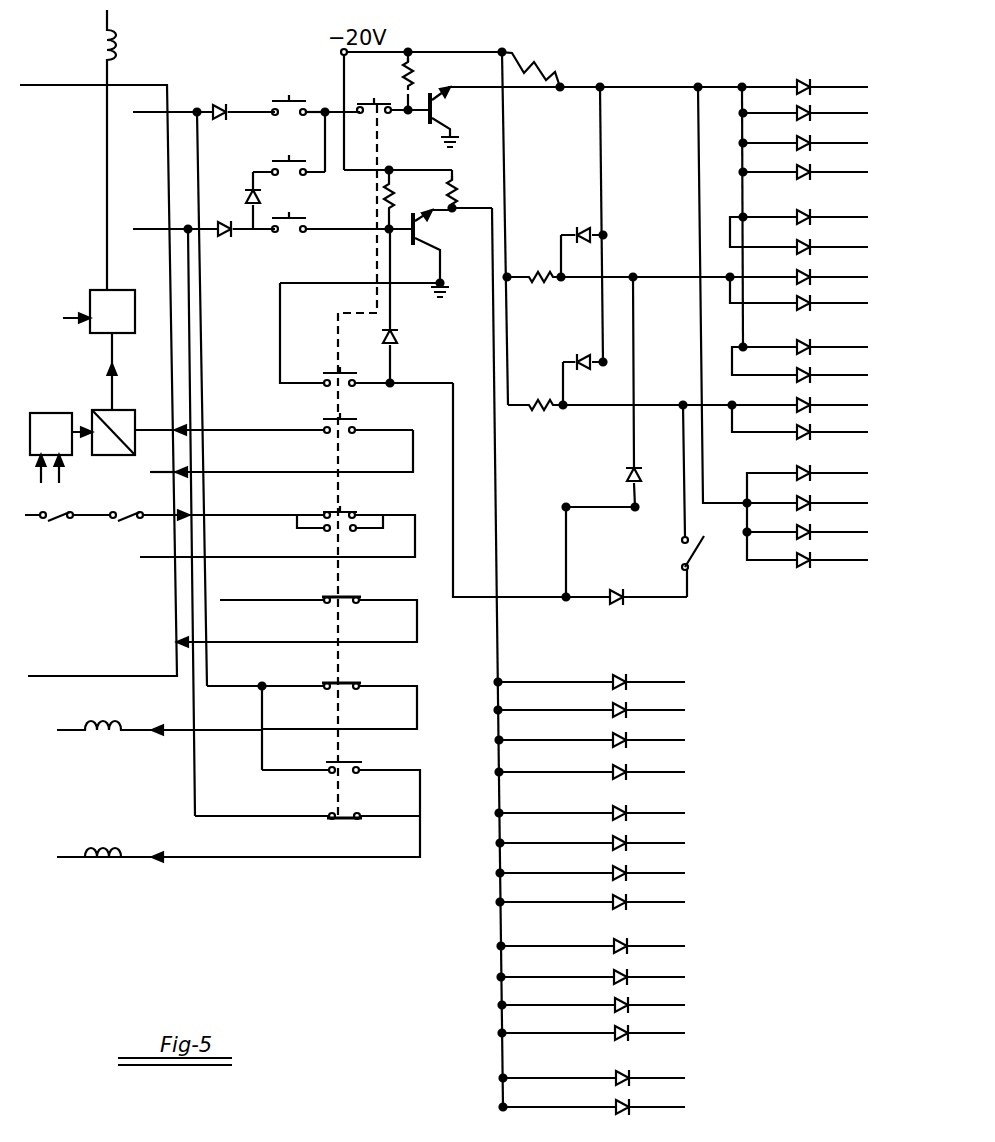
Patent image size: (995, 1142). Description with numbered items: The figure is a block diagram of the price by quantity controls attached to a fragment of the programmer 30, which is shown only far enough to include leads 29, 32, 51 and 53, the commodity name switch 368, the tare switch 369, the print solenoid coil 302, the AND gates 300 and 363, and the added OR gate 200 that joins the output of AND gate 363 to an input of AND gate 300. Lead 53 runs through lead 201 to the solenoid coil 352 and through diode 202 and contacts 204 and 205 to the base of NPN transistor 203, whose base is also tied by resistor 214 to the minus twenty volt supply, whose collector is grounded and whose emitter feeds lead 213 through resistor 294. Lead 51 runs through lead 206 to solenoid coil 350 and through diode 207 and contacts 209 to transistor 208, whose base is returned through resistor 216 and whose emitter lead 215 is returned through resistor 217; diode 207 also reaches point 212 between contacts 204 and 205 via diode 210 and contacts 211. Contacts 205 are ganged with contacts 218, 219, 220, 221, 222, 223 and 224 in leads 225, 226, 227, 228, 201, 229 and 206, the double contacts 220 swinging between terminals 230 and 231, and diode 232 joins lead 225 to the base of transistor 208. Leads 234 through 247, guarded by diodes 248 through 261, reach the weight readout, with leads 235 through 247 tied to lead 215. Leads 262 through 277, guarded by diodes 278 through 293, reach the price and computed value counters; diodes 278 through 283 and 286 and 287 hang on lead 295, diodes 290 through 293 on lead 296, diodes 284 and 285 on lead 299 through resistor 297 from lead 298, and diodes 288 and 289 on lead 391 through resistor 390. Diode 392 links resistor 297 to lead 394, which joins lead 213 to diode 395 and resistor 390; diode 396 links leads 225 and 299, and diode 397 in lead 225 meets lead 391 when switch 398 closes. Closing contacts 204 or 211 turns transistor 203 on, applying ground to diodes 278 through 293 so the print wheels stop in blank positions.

The print solenoid coil 302 is at (101, 57).
The programmer 30 is at (143, 85).
The lead 53 is at (153, 113).
The lead 51 is at (153, 230).
The diode 202 is at (225, 105).
The contacts 204 is at (297, 118).
The point 212 is at (322, 111).
The contacts 205 is at (378, 112).
The resistor 214 is at (415, 73).
The NPN transistor 203 is at (442, 103).
The resistor 294 is at (537, 63).
The lead 213 is at (559, 89).
The diode 210 is at (250, 203).
The contacts 211 is at (289, 178).
The diode 207 is at (225, 237).
The contacts 209 is at (330, 235).
The resistor 216 is at (392, 196).
The resistor 217 is at (456, 191).
The NPN transistor 208 is at (420, 228).
The lead 298 is at (507, 177).
The diode 392 is at (591, 227).
The lead 394 is at (603, 195).
The lead 296 is at (698, 200).
The lead 295 is at (738, 209).
The lead 299 is at (687, 274).
The resistor 297 is at (534, 277).
The lead 215 is at (492, 289).
The AND gate 300 is at (99, 288).
The diode 232 is at (397, 338).
The contacts 218 is at (329, 380).
The lead 225 is at (402, 383).
The contacts 219 is at (329, 426).
The lead 226 is at (400, 428).
The AND gate 363 is at (59, 412).
The OR gate 200 is at (123, 410).
The lead 32 is at (150, 473).
The diode 395 is at (593, 353).
The lead 391 is at (680, 403).
The resistor 390 is at (538, 411).
The terminals 230 is at (326, 513).
The contacts 220 is at (345, 505).
The lead 227 is at (399, 513).
The terminals 231 is at (326, 532).
The tare switch 369 is at (60, 522).
The commodity name switch 368 is at (130, 522).
The diode 396 is at (628, 470).
The switch 398 is at (684, 554).
The diode 397 is at (620, 593).
The lead 29 is at (254, 600).
The contacts 221 is at (343, 591).
The lead 228 is at (400, 600).
The lead 201 is at (220, 686).
The contacts 222 is at (343, 677).
The solenoid coil 352 is at (105, 726).
The contacts 223 is at (340, 763).
The lead 229 is at (411, 771).
The lead 206 is at (258, 812).
The contacts 224 is at (345, 821).
The solenoid coil 350 is at (105, 853).
The diode 278 is at (797, 85).
The diode 279 is at (797, 111).
The diode 280 is at (797, 141).
The diode 281 is at (797, 170).
The diode 282 is at (797, 215).
The diode 283 is at (797, 245).
The diode 284 is at (797, 275).
The diode 285 is at (797, 301).
The diode 286 is at (797, 345).
The diode 287 is at (797, 373).
The diode 288 is at (797, 403).
The diode 289 is at (797, 430).
The diode 290 is at (797, 471).
The diode 291 is at (797, 501).
The diode 292 is at (797, 530).
The diode 293 is at (797, 558).
The lead 262 is at (838, 88).
The lead 263 is at (838, 114).
The lead 264 is at (838, 144).
The lead 265 is at (838, 173).
The lead 266 is at (838, 218).
The lead 267 is at (838, 248).
The lead 268 is at (838, 278).
The lead 269 is at (838, 304).
The lead 270 is at (838, 348).
The lead 271 is at (838, 376).
The lead 272 is at (838, 406).
The lead 273 is at (838, 433).
The lead 274 is at (838, 474).
The lead 275 is at (838, 504).
The lead 276 is at (838, 533).
The lead 277 is at (838, 561).
The diode 248 is at (606, 681).
The diode 249 is at (606, 709).
The diode 250 is at (606, 739).
The diode 251 is at (606, 771).
The diode 252 is at (606, 812).
The diode 253 is at (606, 842).
The diode 254 is at (606, 872).
The diode 255 is at (606, 901).
The diode 256 is at (608, 945).
The diode 257 is at (608, 976).
The diode 258 is at (608, 1004).
The diode 259 is at (608, 1032).
The diode 260 is at (609, 1077).
The diode 261 is at (609, 1106).
The lead 234 is at (676, 683).
The lead 235 is at (676, 711).
The lead 236 is at (676, 741).
The lead 237 is at (676, 773).
The lead 238 is at (676, 814).
The lead 239 is at (676, 844).
The lead 240 is at (676, 874).
The lead 241 is at (676, 903).
The lead 242 is at (676, 947).
The lead 243 is at (676, 978).
The lead 244 is at (676, 1006).
The lead 245 is at (676, 1034).
The lead 246 is at (676, 1079).
The lead 247 is at (676, 1108).